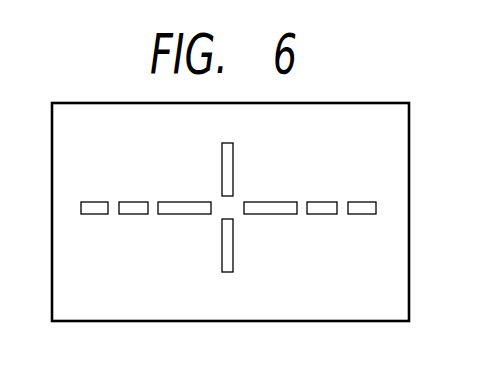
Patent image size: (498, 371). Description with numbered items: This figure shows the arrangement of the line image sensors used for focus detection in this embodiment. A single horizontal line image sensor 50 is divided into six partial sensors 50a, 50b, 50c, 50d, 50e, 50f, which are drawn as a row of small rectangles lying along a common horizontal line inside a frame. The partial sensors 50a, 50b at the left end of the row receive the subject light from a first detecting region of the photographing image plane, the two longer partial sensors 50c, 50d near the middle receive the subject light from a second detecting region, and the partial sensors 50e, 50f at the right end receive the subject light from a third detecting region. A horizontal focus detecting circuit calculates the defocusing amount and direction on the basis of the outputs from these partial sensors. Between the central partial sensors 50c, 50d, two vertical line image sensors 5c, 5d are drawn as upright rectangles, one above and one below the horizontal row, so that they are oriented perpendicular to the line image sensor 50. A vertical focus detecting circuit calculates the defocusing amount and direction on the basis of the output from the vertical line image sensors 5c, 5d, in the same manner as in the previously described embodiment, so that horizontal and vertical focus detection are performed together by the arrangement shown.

The line image sensor 50 is at (362, 228).
The partial sensor 50a is at (97, 201).
The partial sensor 50b is at (132, 201).
The partial sensor 50c is at (178, 214).
The partial sensor 50d is at (273, 214).
The partial sensor 50e is at (320, 201).
The partial sensor 50f is at (365, 201).
The vertical line image sensor 5c is at (227, 167).
The vertical line image sensor 5d is at (226, 268).